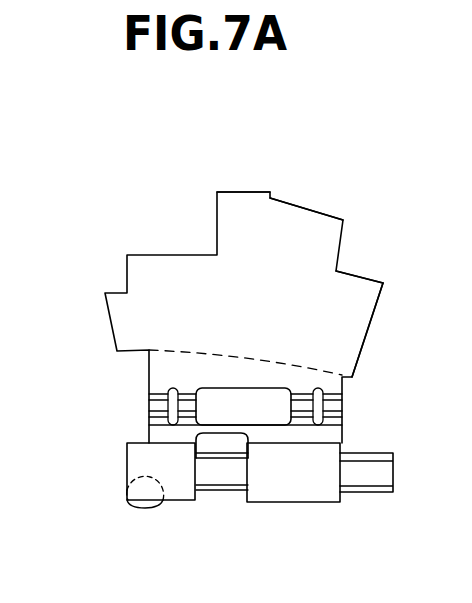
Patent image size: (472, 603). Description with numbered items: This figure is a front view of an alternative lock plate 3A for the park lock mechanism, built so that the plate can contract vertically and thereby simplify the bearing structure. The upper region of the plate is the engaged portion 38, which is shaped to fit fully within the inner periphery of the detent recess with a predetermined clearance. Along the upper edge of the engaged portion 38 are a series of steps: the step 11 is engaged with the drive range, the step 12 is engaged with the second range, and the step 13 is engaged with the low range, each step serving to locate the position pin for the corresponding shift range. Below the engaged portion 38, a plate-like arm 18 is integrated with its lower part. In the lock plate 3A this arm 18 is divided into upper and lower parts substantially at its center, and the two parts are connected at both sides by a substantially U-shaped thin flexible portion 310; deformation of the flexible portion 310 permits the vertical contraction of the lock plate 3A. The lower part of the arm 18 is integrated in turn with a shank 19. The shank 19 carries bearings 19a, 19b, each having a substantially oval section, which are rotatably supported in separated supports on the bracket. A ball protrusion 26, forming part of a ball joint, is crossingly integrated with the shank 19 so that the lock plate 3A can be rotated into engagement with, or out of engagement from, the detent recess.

The lock plate 3A is at (150, 247).
The step 11 is at (242, 200).
The step 12 is at (308, 210).
The step 13 is at (358, 275).
The engaged portion 38 is at (353, 325).
The arm 18 is at (235, 437).
The flexible portion 310 is at (187, 397).
The ball protrusion 26 is at (138, 510).
The bearing 19b is at (223, 478).
The shank 19 is at (302, 495).
The bearing 19a is at (372, 495).